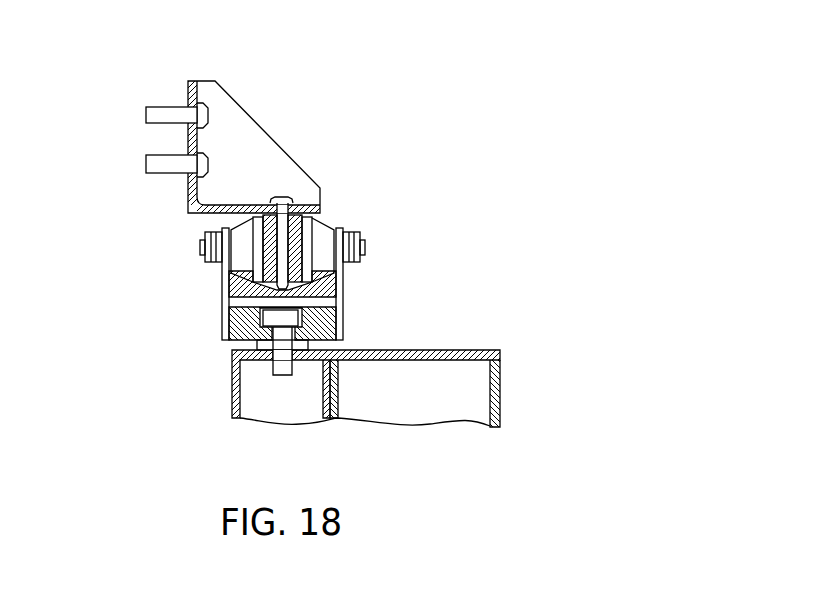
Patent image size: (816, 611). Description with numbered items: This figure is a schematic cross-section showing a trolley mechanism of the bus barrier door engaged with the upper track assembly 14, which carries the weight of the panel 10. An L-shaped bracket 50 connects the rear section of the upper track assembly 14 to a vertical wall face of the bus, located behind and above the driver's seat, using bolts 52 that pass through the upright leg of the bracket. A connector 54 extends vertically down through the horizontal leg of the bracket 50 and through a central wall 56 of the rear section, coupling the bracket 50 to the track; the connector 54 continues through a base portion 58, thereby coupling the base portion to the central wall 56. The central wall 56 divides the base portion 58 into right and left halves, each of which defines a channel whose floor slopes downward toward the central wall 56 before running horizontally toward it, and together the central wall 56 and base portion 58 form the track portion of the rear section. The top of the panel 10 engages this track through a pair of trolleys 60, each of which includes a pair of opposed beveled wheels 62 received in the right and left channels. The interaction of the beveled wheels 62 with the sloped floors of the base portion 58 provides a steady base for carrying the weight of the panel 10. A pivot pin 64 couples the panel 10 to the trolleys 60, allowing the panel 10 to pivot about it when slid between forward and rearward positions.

The panel 10 is at (232, 392).
The upper track assembly 14 is at (293, 128).
The L-shaped bracket 50 is at (190, 196).
The bolts 52 is at (157, 105).
The connectors 54 is at (323, 208).
The central wall 56 is at (322, 232).
The base portion 58 is at (325, 292).
The trolleys 60 is at (218, 297).
The beveled wheels 62 is at (300, 255).
The pivot pin 64 is at (285, 362).